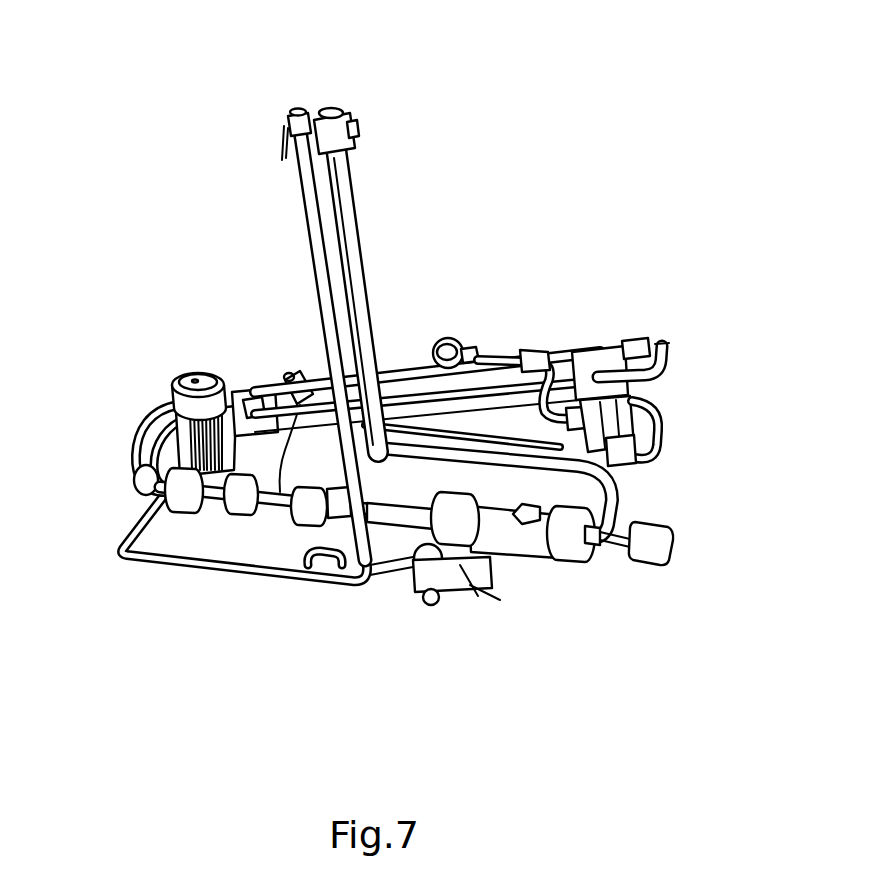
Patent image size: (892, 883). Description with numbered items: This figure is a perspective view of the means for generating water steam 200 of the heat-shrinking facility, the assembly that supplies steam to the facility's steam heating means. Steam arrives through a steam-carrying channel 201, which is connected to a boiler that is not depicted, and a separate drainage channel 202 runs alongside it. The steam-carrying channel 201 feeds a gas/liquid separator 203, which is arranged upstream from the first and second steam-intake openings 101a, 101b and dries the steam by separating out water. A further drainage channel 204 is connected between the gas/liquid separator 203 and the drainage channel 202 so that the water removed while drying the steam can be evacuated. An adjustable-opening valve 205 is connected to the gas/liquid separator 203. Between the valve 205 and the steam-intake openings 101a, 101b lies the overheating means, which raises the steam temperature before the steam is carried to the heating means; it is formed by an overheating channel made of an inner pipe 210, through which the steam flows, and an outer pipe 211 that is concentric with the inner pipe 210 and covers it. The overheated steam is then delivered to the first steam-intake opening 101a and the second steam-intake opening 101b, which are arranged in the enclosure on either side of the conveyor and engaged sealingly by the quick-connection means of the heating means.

The means for generating water steam 200 is at (442, 370).
The steam-carrying channel 201 is at (347, 197).
The drainage channel 202 is at (303, 197).
The gas/liquid separator 203 is at (523, 538).
The drainage channel 204 is at (388, 570).
The adjustable-opening valve 205 is at (190, 372).
The inner pipe 210 is at (473, 432).
The outer pipe 211 is at (412, 417).
The first steam-intake opening 101a is at (643, 453).
The second steam-intake opening 101b is at (658, 345).